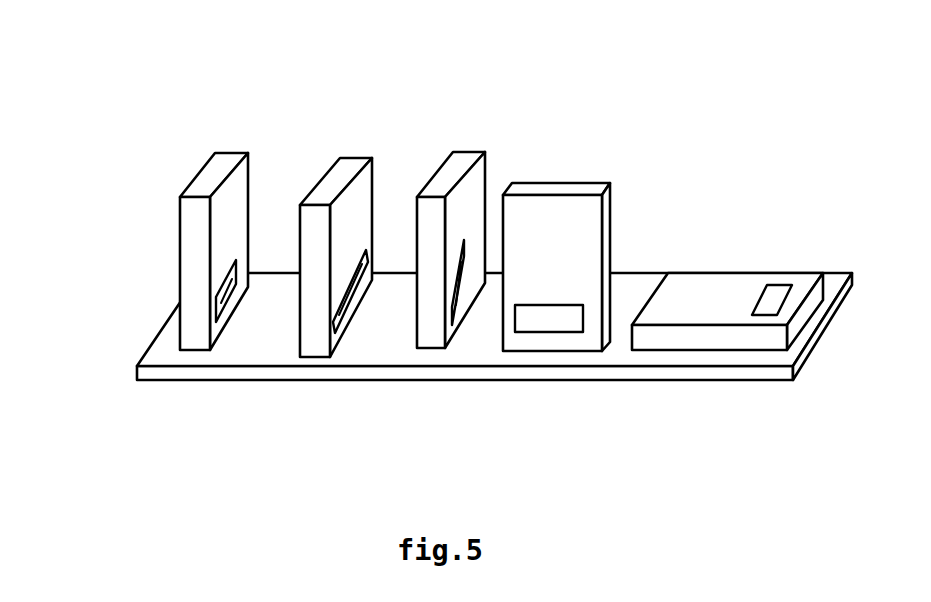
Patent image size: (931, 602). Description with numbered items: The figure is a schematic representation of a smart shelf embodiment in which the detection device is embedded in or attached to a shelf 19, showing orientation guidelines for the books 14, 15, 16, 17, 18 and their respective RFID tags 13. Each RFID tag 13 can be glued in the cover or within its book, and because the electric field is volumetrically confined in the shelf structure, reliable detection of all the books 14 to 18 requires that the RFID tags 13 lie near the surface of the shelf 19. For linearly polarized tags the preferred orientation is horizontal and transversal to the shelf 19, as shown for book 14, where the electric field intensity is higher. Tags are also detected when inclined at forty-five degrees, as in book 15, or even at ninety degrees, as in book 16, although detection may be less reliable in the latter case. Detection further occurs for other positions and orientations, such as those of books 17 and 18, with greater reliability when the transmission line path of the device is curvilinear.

The RFID tags 13 is at (223, 292).
The book 14 is at (222, 166).
The book 15 is at (345, 173).
The book 16 is at (463, 160).
The book 17 is at (583, 181).
The book 18 is at (698, 289).
The shelf 19 is at (137, 366).